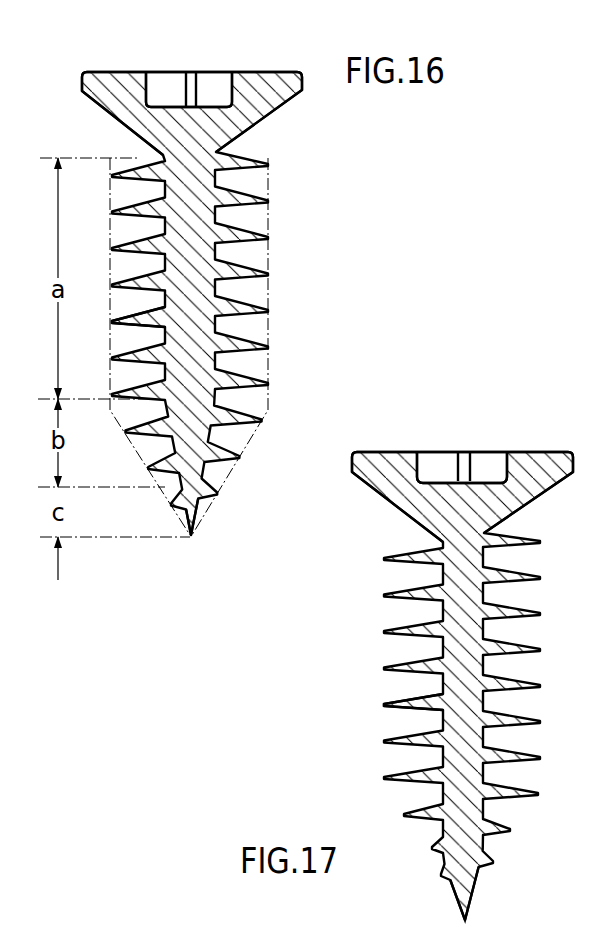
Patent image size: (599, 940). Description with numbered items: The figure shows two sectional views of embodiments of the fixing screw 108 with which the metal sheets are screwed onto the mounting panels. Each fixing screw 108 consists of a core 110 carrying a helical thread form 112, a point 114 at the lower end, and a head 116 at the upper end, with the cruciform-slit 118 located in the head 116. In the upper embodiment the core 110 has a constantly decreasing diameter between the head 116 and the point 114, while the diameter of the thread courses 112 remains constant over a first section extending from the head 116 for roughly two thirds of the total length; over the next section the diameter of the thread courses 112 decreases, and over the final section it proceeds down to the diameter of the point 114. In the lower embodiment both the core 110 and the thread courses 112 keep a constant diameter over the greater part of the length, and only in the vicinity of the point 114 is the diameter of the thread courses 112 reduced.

In FIG. 16, the fixing screw 108 is at (277, 323).
In FIG. 17, the core 110 is at (453, 648).
In FIG. 16, the helical thread form 112 is at (143, 337).
In FIG. 17, the helical thread form 112 is at (420, 712).
In FIG. 16, the point 114 is at (195, 508).
In FIG. 17, the point 114 is at (463, 898).
In FIG. 16, the head 116 is at (103, 90).
In FIG. 17, the head 116 is at (530, 466).
In FIG. 16, the cruciform-slit 118 is at (188, 76).
In FIG. 17, the cruciform-slit 118 is at (459, 468).